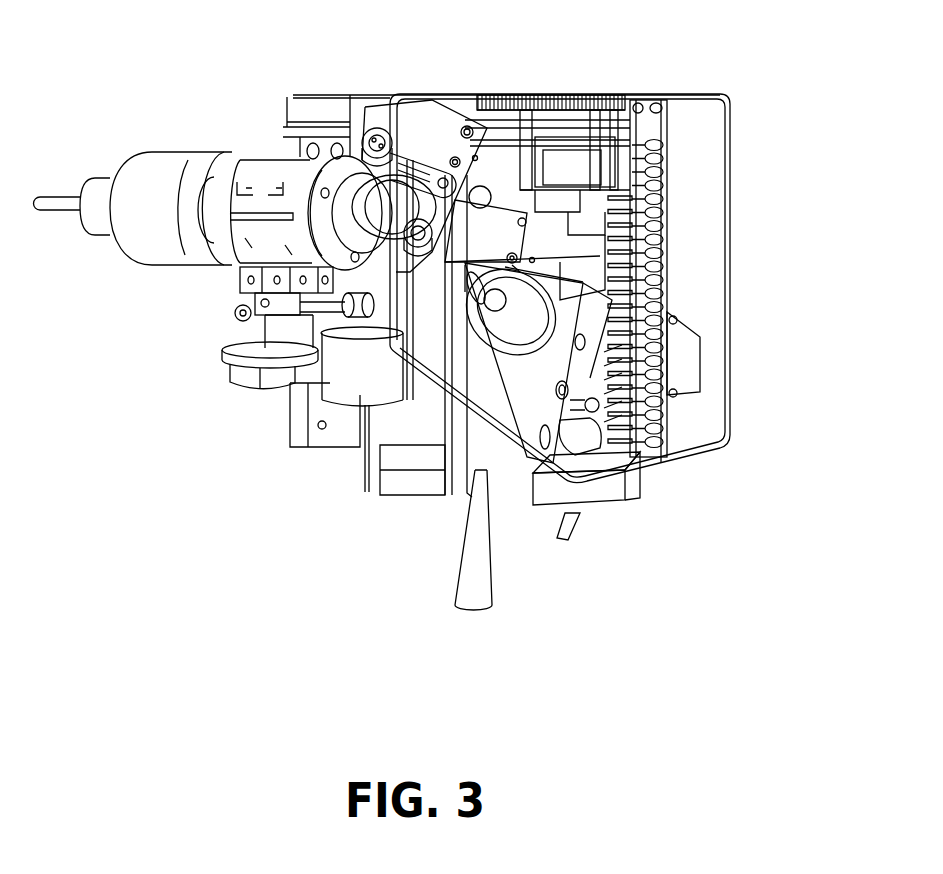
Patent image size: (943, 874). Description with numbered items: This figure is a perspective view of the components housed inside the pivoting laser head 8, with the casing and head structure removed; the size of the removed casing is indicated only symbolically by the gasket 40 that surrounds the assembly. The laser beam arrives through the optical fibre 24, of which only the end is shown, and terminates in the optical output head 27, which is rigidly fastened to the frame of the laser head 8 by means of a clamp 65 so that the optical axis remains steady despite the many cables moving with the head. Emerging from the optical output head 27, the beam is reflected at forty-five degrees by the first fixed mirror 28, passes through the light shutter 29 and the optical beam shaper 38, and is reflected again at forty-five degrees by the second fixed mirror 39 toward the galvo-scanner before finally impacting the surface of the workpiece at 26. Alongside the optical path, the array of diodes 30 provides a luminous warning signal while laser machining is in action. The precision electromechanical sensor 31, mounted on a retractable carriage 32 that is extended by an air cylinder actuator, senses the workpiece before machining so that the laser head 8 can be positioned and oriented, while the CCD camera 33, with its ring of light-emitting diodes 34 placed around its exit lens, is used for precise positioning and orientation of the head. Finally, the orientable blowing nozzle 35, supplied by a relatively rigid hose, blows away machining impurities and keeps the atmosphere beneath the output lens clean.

The laser head 8 is at (153, 546).
The optical fibre 24 is at (50, 203).
The workpiece impact point 26 is at (463, 592).
The optical output head 27 is at (150, 232).
The first fixed mirror 28 is at (356, 135).
The light shutter 29 is at (496, 216).
The array of diodes 30 is at (637, 260).
The electromechanical sensor 31 is at (367, 480).
The retractable carriage 32 is at (433, 437).
The CCD camera 33 is at (282, 332).
The ring of light-emitting diodes 34 is at (238, 373).
The orientable blowing nozzle 35 is at (567, 525).
The optical beam shaper 38 is at (518, 330).
The second fixed mirror 39 is at (673, 392).
The gasket 40 is at (730, 93).
The clamp 65 is at (271, 168).